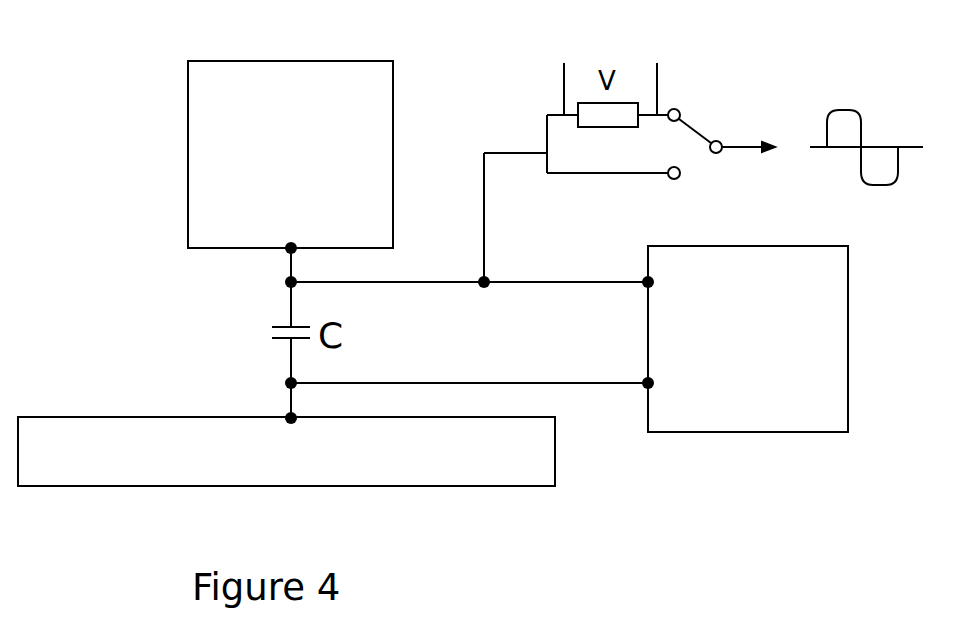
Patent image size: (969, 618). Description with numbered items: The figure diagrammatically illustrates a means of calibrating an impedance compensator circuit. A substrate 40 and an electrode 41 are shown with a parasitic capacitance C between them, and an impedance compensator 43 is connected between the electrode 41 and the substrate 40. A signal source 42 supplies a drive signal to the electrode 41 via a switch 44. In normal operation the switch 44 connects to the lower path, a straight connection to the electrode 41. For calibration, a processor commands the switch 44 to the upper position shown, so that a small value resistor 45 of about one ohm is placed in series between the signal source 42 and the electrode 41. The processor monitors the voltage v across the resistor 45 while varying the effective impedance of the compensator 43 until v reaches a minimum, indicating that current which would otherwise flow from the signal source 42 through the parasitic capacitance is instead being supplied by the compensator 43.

The substrate 40 is at (511, 487).
The electrode 41 is at (188, 95).
The signal source 42 is at (862, 128).
The impedance compensator 43 is at (848, 333).
The switch 44 is at (694, 130).
The resistor 45 is at (618, 103).